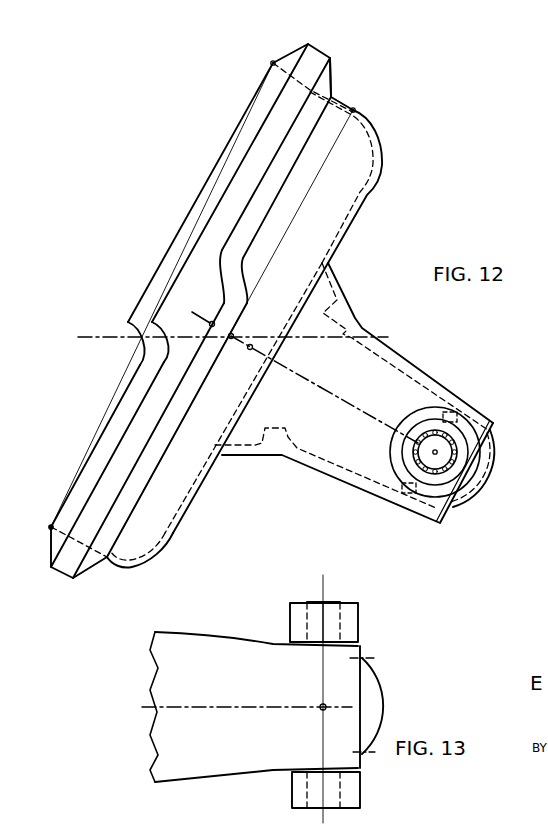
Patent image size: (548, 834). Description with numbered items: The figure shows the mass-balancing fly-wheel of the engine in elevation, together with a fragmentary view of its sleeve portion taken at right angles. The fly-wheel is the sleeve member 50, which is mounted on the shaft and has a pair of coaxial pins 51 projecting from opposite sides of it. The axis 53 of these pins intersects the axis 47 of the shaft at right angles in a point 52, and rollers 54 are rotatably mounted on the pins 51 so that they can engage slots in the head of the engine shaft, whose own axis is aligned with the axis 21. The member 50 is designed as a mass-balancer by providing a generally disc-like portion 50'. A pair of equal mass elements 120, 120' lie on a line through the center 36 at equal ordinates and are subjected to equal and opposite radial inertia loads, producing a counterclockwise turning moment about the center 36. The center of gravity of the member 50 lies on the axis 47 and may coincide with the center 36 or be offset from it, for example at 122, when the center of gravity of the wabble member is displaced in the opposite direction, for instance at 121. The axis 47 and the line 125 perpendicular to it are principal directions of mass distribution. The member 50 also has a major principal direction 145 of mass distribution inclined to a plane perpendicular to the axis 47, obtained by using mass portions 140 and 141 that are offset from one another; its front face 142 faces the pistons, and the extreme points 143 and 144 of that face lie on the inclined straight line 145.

In FIG. 12, the axis 21 is at (93, 341).
In FIG. 12, the center 36 is at (234, 334).
In FIG. 12, the axis of the shaft 47 is at (368, 413).
In FIG. 13, the axis of the shaft 47 is at (226, 707).
In FIG. 12, the sleeve member 50 is at (354, 393).
In FIG. 13, the sleeve member 50 is at (266, 695).
In FIG. 12, the disc-like portion 50' is at (350, 77).
In FIG. 12, the coaxial pins 51 is at (433, 458).
In FIG. 13, the coaxial pins 51 is at (320, 600).
In FIG. 13, the point 52 is at (326, 705).
In FIG. 12, the axis of the pins 53 is at (456, 453).
In FIG. 13, the axis of the pins 53 is at (325, 596).
In FIG. 12, the rollers 54 is at (395, 461).
In FIG. 13, the rollers 54 is at (350, 624).
In FIG. 12, the mass element 120 is at (279, 311).
In FIG. 12, the mass element 120' is at (135, 568).
In FIG. 12, the center of gravity of the wabble member 121 is at (249, 350).
In FIG. 12, the center of gravity 122 is at (213, 321).
In FIG. 12, the line 125 is at (267, 277).
In FIG. 12, the mass portion 140 is at (300, 62).
In FIG. 12, the mass portion 141 is at (70, 570).
In FIG. 12, the front face 142 is at (145, 292).
In FIG. 12, the extreme point 143 is at (276, 46).
In FIG. 12, the extreme point 144 is at (49, 532).
In FIG. 12, the major principal direction of mass distribution 145 is at (193, 206).